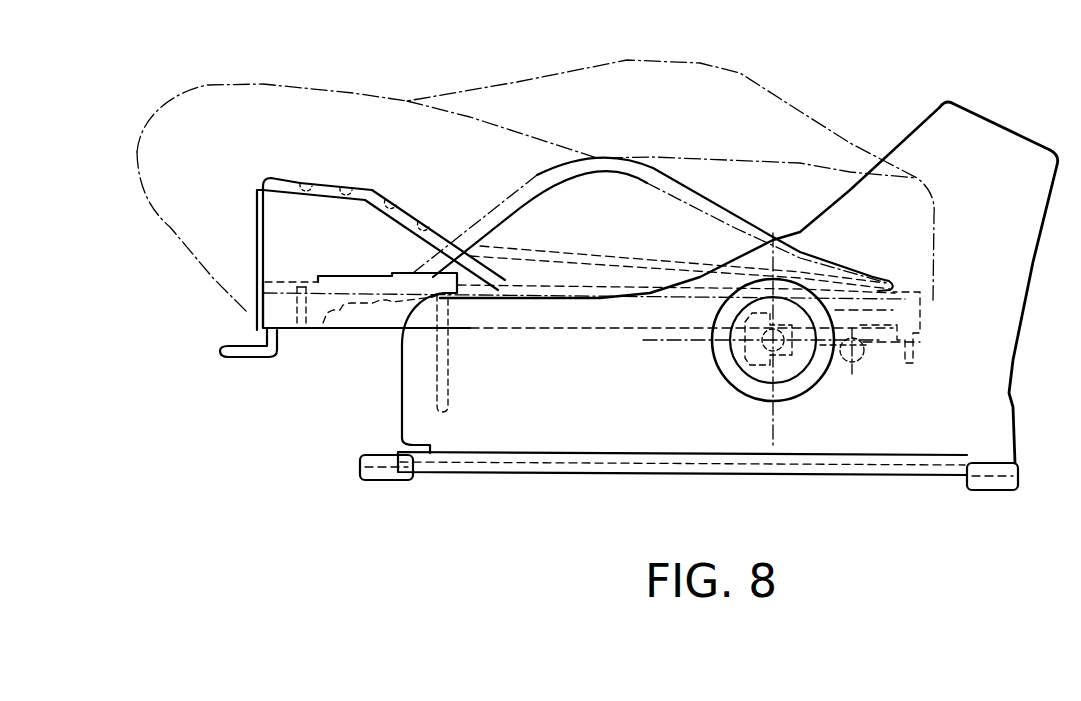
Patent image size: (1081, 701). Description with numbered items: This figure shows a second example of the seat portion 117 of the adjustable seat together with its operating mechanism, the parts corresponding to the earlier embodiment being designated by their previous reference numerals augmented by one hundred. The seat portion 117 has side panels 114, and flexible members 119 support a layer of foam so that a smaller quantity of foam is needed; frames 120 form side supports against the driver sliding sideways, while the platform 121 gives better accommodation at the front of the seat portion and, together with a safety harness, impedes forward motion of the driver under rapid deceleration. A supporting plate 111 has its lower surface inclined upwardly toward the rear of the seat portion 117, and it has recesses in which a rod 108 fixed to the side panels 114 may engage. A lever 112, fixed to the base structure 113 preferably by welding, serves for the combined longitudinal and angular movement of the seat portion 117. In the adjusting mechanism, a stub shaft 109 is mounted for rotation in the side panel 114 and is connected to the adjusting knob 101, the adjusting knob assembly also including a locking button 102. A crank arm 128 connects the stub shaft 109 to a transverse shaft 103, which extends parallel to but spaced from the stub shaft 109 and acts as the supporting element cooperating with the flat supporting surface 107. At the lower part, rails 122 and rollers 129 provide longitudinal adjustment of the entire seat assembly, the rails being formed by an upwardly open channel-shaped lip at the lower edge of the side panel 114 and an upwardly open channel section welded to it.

The adjusting knob 101 is at (730, 373).
The locking button 102 is at (790, 377).
The transverse shaft 103 is at (856, 365).
The flat supporting surface 107 is at (905, 370).
The rod 108 is at (445, 370).
The stub shaft 109 is at (765, 358).
The supporting plate 111 is at (347, 302).
The lever 112 is at (221, 357).
The base structure 113 is at (270, 312).
The side panel 114 is at (993, 400).
The seat portion 117 is at (805, 185).
The flexible members 119 is at (565, 255).
The frames 120 is at (708, 205).
The platform 121 is at (370, 193).
The rails 122 is at (430, 462).
The crank arm 128 is at (838, 362).
The rollers 129 is at (378, 480).